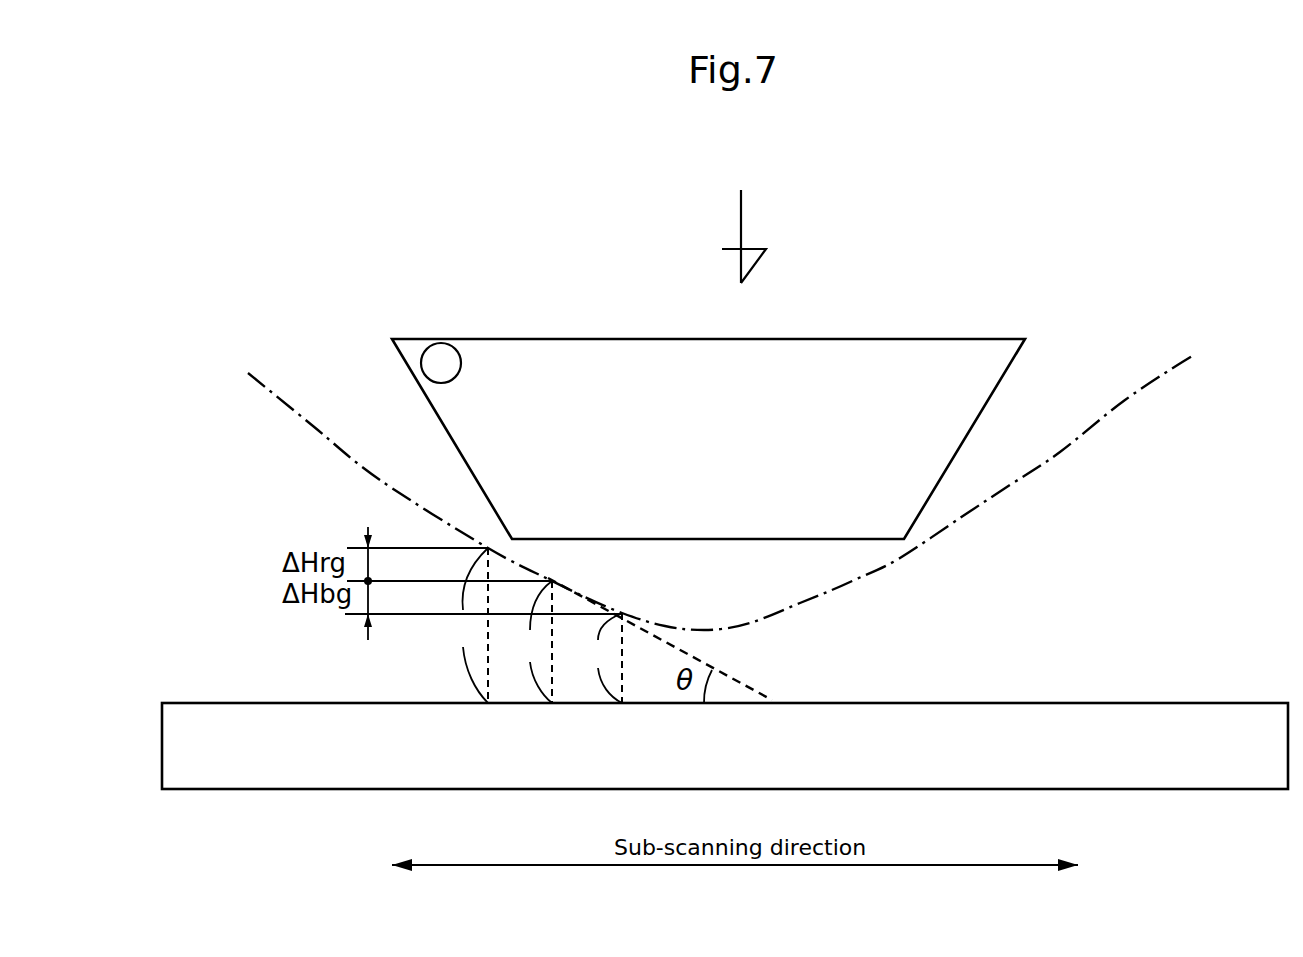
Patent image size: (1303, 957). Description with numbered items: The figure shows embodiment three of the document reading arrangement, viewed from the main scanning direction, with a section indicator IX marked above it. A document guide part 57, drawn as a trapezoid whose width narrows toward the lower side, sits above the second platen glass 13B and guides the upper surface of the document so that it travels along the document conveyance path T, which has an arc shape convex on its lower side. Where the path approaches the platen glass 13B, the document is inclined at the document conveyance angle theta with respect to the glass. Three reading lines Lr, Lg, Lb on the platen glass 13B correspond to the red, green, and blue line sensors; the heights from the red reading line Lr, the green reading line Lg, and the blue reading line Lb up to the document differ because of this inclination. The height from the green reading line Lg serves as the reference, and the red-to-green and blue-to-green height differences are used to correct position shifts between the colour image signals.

The document guide part 57 is at (506, 339).
The second platen glass 13B is at (1013, 715).
The document conveyance path T is at (313, 420).
The section line IX is at (746, 236).
The red reading line Lr is at (488, 703).
The green reading line Lg is at (552, 703).
The blue reading line Lb is at (622, 703).